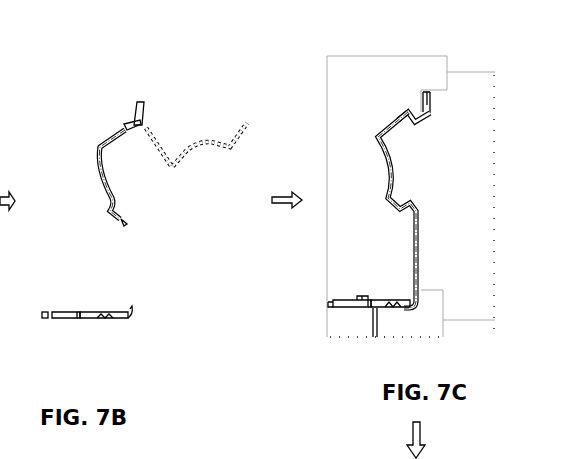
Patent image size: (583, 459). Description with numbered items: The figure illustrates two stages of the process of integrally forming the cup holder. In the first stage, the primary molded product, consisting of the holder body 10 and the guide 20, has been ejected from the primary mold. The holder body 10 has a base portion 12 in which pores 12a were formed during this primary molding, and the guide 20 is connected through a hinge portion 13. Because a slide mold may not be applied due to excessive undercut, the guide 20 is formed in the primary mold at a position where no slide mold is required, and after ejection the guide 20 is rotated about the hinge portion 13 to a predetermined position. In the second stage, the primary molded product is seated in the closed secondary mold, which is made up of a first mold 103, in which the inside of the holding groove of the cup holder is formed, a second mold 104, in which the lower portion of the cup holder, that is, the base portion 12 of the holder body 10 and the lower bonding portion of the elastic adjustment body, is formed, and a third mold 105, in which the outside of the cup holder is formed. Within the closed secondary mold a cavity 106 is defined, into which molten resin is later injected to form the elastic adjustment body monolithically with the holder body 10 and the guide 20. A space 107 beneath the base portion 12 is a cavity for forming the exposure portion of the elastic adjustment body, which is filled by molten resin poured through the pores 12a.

In FIG. 7B, the holder body 10 is at (152, 100).
In FIG. 7C, the holder body 10 is at (442, 99).
In FIG. 7B, the base portion 12 is at (88, 320).
In FIG. 7C, the base portion 12 is at (380, 300).
In FIG. 7B, the pores 12a is at (80, 311).
In FIG. 7C, the pores 12a is at (334, 308).
In FIG. 7B, the hinge portion 13 is at (125, 112).
In FIG. 7C, the hinge portion 13 is at (424, 113).
In FIG. 7B, the guide 20 is at (98, 173).
In FIG. 7C, the guide 20 is at (418, 170).
In FIG. 7C, the first mold 103 is at (352, 103).
In FIG. 7C, the second mold 104 is at (348, 330).
In FIG. 7C, the third mold 105 is at (470, 225).
In FIG. 7C, the cavity 106 is at (393, 112).
In FIG. 7C, the space 107 is at (328, 298).